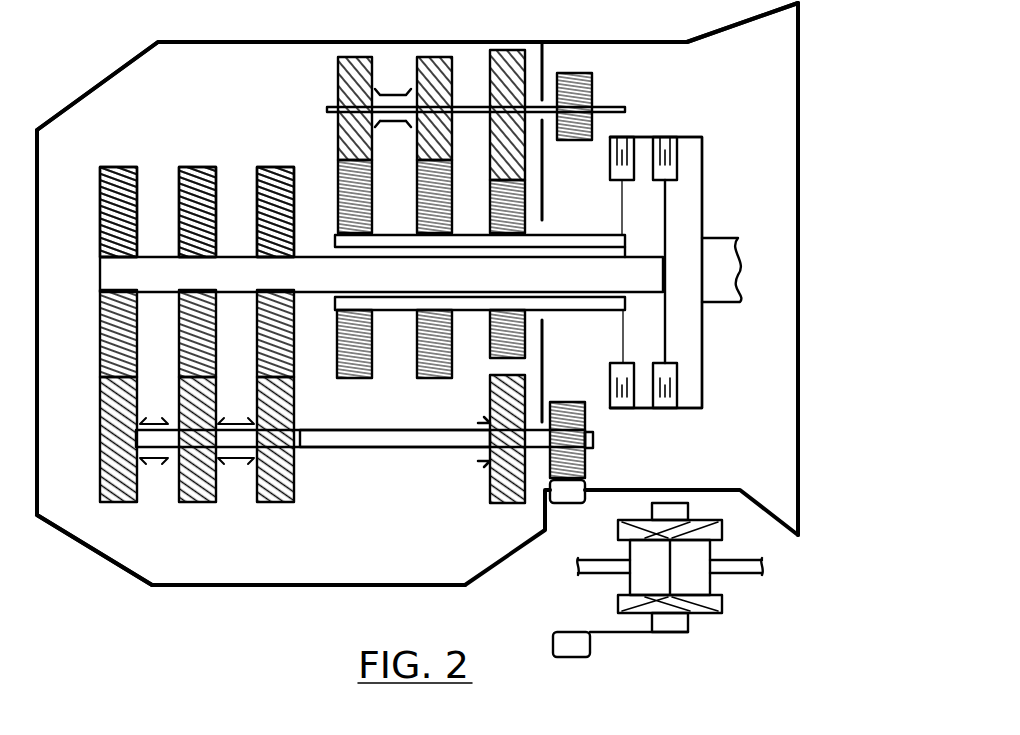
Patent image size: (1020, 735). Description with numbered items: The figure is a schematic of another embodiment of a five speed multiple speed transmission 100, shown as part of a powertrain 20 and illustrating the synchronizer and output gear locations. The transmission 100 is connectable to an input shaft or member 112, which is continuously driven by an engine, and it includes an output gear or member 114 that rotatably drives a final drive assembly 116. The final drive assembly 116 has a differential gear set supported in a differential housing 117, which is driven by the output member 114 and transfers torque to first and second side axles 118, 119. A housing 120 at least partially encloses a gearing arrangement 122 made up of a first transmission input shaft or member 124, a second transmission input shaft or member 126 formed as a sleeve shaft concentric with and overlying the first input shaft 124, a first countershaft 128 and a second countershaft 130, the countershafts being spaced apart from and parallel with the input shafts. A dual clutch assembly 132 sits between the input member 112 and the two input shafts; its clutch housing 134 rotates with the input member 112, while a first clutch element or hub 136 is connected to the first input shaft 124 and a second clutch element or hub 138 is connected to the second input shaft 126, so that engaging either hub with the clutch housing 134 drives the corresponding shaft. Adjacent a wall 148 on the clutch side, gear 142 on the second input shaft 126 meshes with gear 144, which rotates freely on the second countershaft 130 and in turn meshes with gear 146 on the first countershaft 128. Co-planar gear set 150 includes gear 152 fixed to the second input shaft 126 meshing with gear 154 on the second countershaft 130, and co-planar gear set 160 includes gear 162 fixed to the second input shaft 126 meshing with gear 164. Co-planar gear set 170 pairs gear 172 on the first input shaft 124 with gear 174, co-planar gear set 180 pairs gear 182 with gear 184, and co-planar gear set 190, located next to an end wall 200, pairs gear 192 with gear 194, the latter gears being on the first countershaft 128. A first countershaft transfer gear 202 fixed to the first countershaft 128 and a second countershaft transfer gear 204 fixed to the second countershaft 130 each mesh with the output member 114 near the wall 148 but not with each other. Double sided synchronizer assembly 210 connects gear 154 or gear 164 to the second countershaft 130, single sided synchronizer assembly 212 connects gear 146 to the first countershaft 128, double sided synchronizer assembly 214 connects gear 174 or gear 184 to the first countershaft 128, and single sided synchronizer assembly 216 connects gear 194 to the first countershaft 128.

The powertrain 20 is at (90, 355).
The multiple speed transmission 100 is at (650, 36).
The input shaft or member 112 is at (722, 305).
The output gear or member 114 is at (562, 505).
The final drive assembly 116 is at (770, 545).
The differential housing 117 is at (690, 512).
The first side axle 118 is at (755, 574).
The second side axle 119 is at (578, 574).
The housing 120 is at (77, 97).
The gearing arrangement 122 is at (150, 37).
The first transmission input shaft or member 124 is at (100, 266).
The second transmission input shaft or member 126 is at (336, 240).
The first countershaft 128 is at (318, 430).
The second countershaft 130 is at (328, 110).
The dual clutch assembly 132 is at (722, 205).
The clutch housing 134 is at (703, 135).
The first clutch element or hub 136 is at (666, 340).
The second clutch element or hub 138 is at (633, 182).
The gear 142 is at (490, 330).
The gear 144 is at (490, 128).
The gear 146 is at (490, 503).
The wall 148 is at (545, 170).
The co-planar gear set 150 is at (415, 462).
The gear 152 is at (490, 183).
The gear 154 is at (418, 146).
The co-planar gear set 160 is at (358, 410).
The gear 162 is at (372, 355).
The gear 164 is at (336, 60).
The co-planar gear set 170 is at (272, 155).
The gear 172 is at (257, 196).
The gear 174 is at (294, 470).
The co-planar gear set 180 is at (195, 155).
The gear 182 is at (179, 196).
The gear 184 is at (179, 485).
The co-planar gear set 190 is at (118, 155).
The gear 192 is at (100, 196).
The gear 194 is at (100, 470).
The end wall 200 is at (82, 553).
The first countershaft transfer gear 202 is at (578, 400).
The second countershaft transfer gear 204 is at (590, 72).
The synchronizer assembly 210 is at (393, 93).
The synchronizer assembly 212 is at (470, 466).
The synchronizer assembly 214 is at (238, 418).
The synchronizer assembly 216 is at (160, 418).